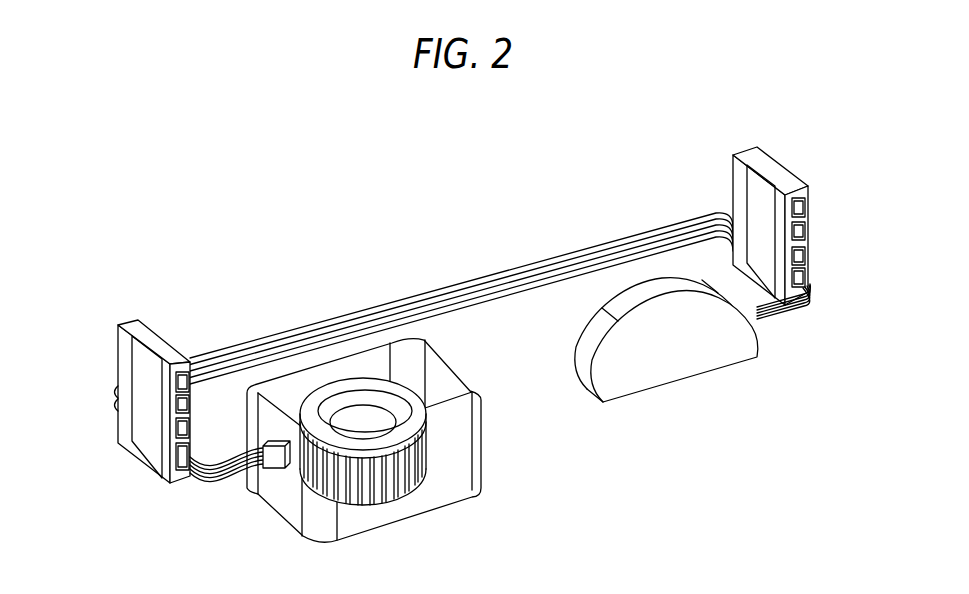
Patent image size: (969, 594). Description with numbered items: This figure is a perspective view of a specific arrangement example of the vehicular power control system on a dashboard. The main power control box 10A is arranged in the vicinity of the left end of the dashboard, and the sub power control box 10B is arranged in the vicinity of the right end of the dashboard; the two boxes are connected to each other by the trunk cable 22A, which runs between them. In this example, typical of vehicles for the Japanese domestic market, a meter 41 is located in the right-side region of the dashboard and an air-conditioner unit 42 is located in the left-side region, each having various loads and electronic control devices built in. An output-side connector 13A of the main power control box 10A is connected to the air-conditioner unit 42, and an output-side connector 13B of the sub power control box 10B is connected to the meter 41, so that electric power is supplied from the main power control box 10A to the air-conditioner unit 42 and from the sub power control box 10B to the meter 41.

The main power control box 10A is at (130, 407).
The sub power control box 10B is at (778, 233).
The output-side connector of the main power control box 13A is at (182, 465).
The output-side connector of the sub power control box 13B is at (808, 273).
The trunk cable 22A is at (514, 290).
The meter 41 is at (722, 366).
The air-conditioner unit 42 is at (481, 438).